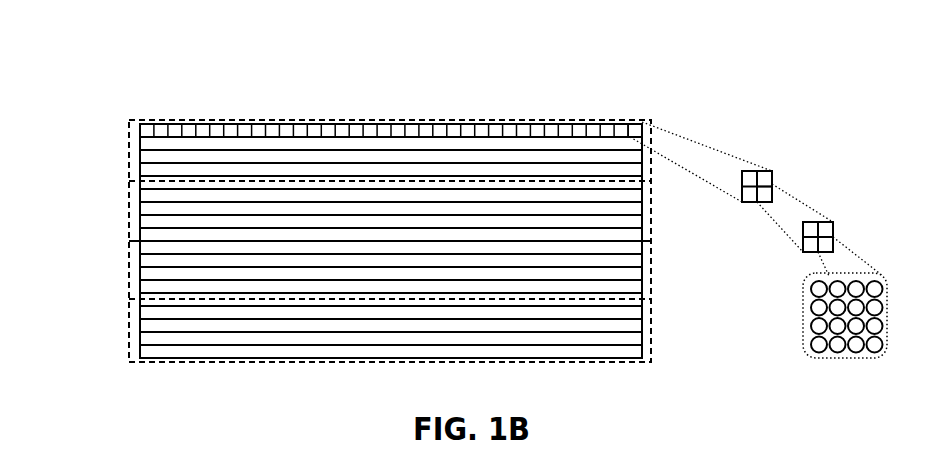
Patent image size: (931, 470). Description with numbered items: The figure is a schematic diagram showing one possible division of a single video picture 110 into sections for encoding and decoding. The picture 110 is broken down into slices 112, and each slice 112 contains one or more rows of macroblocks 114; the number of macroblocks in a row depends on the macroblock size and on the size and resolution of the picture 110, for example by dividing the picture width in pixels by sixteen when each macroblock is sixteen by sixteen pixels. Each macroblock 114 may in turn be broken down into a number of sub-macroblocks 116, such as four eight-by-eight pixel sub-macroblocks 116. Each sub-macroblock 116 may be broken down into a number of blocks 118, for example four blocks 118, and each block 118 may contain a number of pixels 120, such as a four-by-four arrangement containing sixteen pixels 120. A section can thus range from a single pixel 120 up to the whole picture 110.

The picture 110 is at (157, 63).
The slice 112 is at (138, 131).
The macroblock 114 is at (745, 150).
The sub-macroblock 116 is at (843, 203).
The block 118 is at (822, 248).
The pixel 120 is at (855, 346).